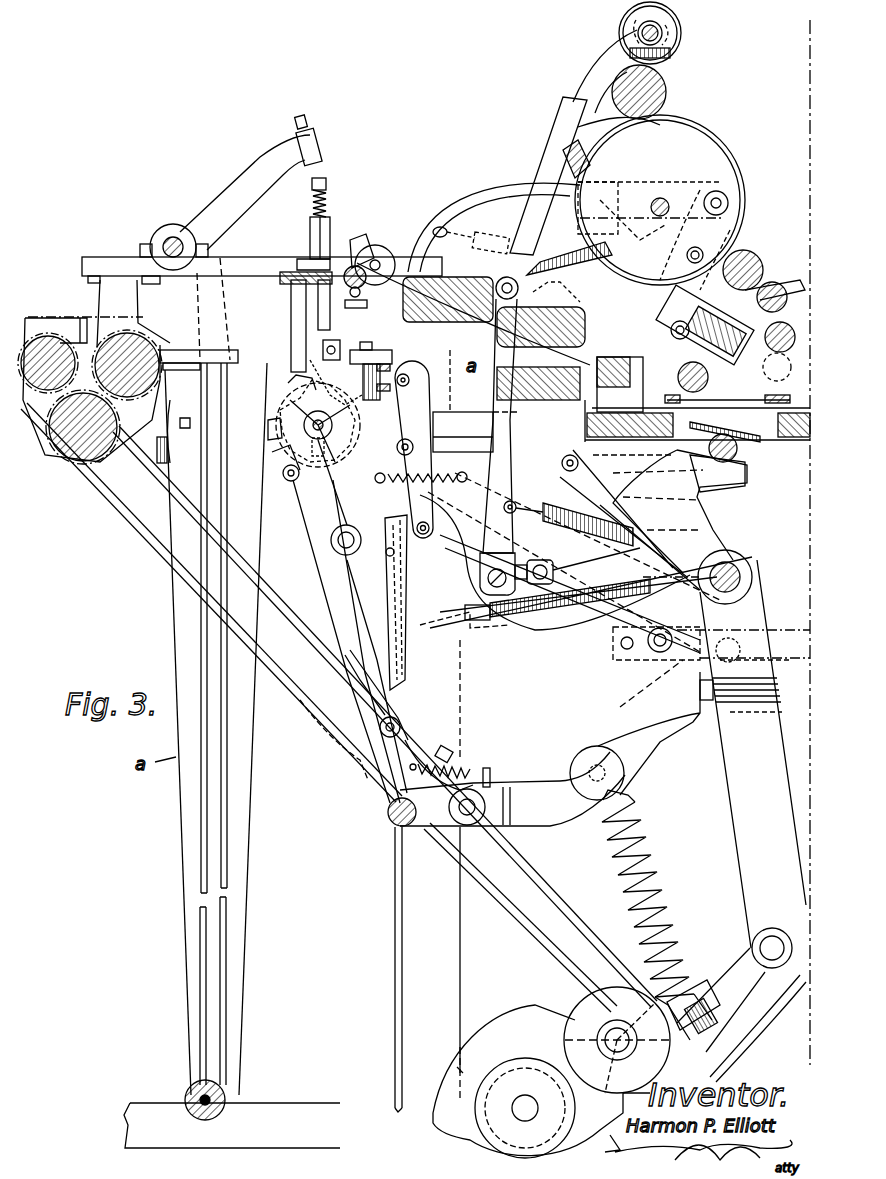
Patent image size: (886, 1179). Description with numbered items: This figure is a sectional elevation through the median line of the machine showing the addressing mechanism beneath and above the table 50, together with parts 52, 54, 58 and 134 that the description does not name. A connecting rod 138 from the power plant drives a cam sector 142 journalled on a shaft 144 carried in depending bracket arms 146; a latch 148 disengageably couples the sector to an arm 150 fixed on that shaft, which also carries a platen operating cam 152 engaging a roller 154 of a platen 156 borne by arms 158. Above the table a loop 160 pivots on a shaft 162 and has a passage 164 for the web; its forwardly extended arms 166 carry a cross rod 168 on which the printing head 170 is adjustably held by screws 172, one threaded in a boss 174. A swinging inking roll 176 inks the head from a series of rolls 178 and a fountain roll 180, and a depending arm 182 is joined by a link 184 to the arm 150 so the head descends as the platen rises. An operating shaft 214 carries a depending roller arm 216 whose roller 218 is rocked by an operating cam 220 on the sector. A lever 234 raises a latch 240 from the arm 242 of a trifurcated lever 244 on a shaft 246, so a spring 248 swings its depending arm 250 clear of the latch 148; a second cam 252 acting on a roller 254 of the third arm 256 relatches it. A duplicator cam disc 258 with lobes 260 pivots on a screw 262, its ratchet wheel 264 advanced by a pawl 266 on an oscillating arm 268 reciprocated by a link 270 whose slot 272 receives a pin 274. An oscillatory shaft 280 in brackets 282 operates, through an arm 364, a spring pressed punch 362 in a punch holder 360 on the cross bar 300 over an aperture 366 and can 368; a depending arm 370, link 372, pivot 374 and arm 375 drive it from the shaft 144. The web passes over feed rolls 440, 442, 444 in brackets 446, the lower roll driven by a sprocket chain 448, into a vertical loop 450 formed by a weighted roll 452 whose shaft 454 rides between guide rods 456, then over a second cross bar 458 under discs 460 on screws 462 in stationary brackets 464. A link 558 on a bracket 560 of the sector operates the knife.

The table 50 is at (793, 450).
The frame upright 52 is at (398, 933).
The table plate 54 is at (782, 410).
The wedge 58 is at (742, 433).
The pulley 134 is at (613, 1007).
The connecting rod 138 is at (678, 911).
The cam sector 142 is at (555, 822).
The shaft 144 is at (736, 566).
The depending bracket arms 146 is at (652, 546).
The latch 148 is at (425, 776).
The arm 150 is at (648, 742).
The platen operating cam 152 is at (725, 521).
The roller 154 is at (746, 462).
The platen 156 is at (738, 446).
The arms 158 is at (600, 480).
The loop 160 is at (594, 333).
The shaft 162 is at (653, 411).
The passage 164 is at (572, 360).
The forwardly extended arms 166 is at (580, 302).
The cross rod 168 is at (672, 332).
The printing head 170 is at (681, 352).
The screws 172 is at (654, 236).
The boss 174 is at (743, 277).
The swinging inking roll 176 is at (703, 379).
The rolls 178 is at (771, 281).
The fountain roll 180 is at (682, 38).
The depending arm 182 is at (505, 447).
The link 184 is at (602, 612).
The operating shaft 214 is at (413, 378).
The depending roller arm 216 is at (433, 428).
The roller 218 is at (418, 540).
The operating cam 220 is at (408, 586).
The lever 234 is at (372, 374).
The latch 240 is at (386, 349).
The arm 242 is at (333, 341).
The trifurcated lever 244 is at (344, 524).
The shaft 246 is at (340, 556).
The spring 248 is at (548, 635).
The depending arm 250 is at (365, 608).
The second cam 252 is at (439, 574).
The roller 254 is at (425, 456).
The third arm 256 is at (456, 481).
The duplicator cam disc 258 is at (280, 404).
The lobes 260 is at (290, 389).
The screw 262 is at (325, 445).
The ratchet wheel 264 is at (268, 428).
The pawl 266 is at (272, 452).
The oscillating arm 268 is at (283, 474).
The link 270 is at (331, 541).
The slot 272 is at (360, 697).
The pin 274 is at (392, 823).
The oscillatory shaft 280 is at (172, 237).
The brackets 282 is at (100, 262).
The cross bar 300 is at (291, 271).
The punch holder 360 is at (325, 228).
The spring pressed punch 362 is at (330, 180).
The arm 364 is at (236, 189).
The aperture 366 is at (332, 258).
The can 368 is at (338, 316).
The depending arm 370 is at (222, 321).
The link 372 is at (580, 552).
The pivotal connection 374 is at (765, 637).
The arm 375 is at (757, 610).
The feed roll 440 is at (37, 317).
The lower feed roll 442 is at (62, 460).
The feed roll 444 is at (140, 330).
The brackets 446 is at (110, 312).
The sprocket chain 448 is at (140, 528).
The vertical loop 450 is at (250, 828).
The weighted roll 452 is at (200, 1080).
The shaft 454 is at (200, 1094).
The vertical guide rods 456 is at (222, 956).
The second cross bar 458 is at (360, 291).
The discs 460 is at (388, 247).
The screws 462 is at (366, 262).
The stationary brackets 464 is at (443, 233).
The link 558 is at (790, 650).
The bracket 560 is at (632, 672).